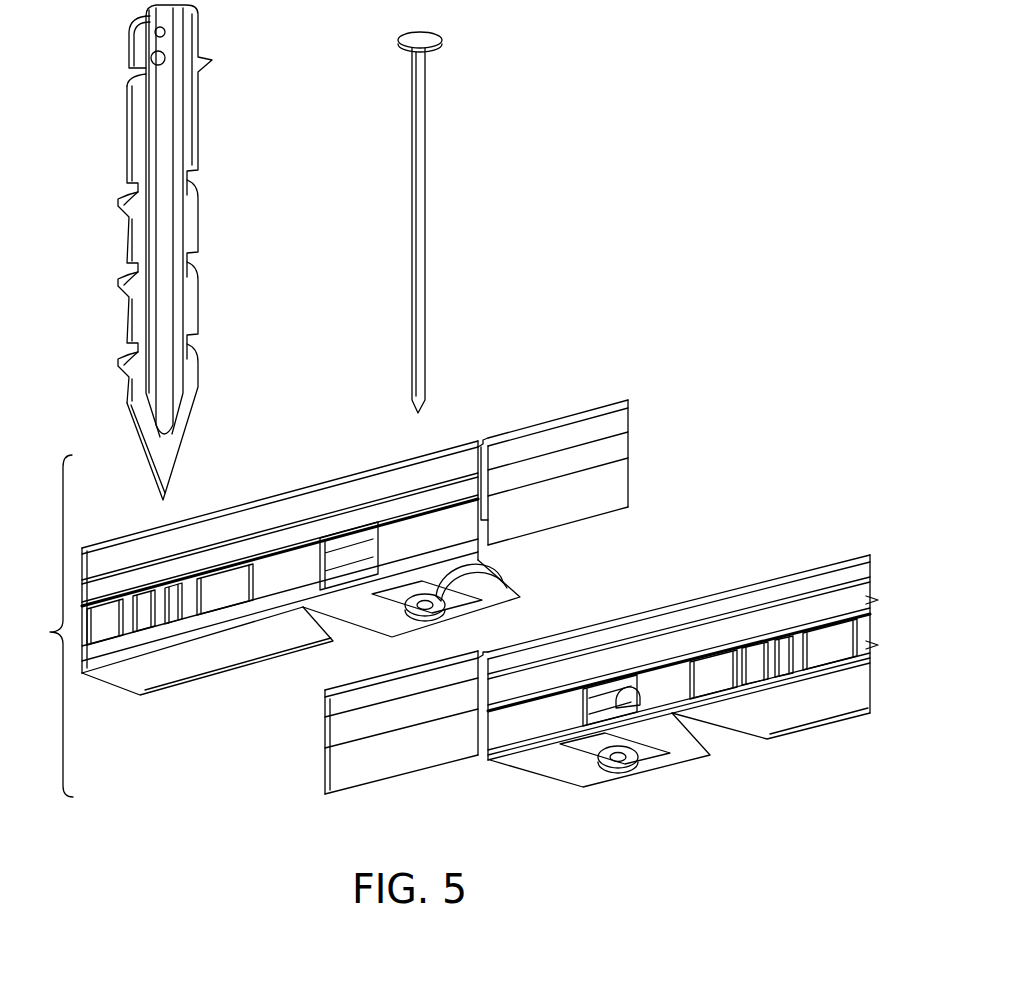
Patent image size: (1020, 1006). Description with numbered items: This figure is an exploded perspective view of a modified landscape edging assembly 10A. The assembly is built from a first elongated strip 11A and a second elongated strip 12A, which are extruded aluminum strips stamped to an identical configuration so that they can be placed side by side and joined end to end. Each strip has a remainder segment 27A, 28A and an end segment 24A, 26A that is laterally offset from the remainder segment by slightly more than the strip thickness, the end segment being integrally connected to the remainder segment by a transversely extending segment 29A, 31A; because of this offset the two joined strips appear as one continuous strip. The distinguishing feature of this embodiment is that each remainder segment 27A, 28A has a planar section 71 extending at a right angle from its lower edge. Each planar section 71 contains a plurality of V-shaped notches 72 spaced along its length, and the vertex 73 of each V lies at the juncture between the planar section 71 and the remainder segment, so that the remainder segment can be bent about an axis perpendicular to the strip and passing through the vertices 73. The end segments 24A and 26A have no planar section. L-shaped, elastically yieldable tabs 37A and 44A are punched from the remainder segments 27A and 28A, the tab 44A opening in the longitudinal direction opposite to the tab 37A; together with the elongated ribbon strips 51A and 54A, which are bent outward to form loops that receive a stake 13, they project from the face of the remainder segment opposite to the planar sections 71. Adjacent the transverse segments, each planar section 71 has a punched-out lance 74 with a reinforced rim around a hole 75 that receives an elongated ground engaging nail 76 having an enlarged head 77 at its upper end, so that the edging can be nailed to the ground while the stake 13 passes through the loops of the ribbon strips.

The stake 13 is at (203, 143).
The enlarged head 77 is at (438, 40).
The elongated ground engaging nail 76 is at (429, 185).
The landscape edging assembly 10A is at (476, 282).
The transversely extending segment 29A is at (482, 440).
The end segment 24A is at (590, 432).
The tab 37A is at (340, 556).
The elongated strip 11A is at (394, 465).
The remainder segment 27A is at (266, 500).
The elongated ribbon strip 51A is at (172, 607).
The vertex 73 is at (302, 609).
The hole 75 is at (498, 580).
The lance 74 is at (480, 593).
The V-shaped notch 72 is at (112, 700).
The planar section 71 is at (243, 672).
The tab 44A is at (602, 698).
The elongated strip 12A is at (693, 598).
The elongated ribbon strip 54A is at (777, 652).
The remainder segment 28A is at (810, 565).
The end segment 26A is at (385, 762).
The transversely extending segment 31A is at (478, 760).